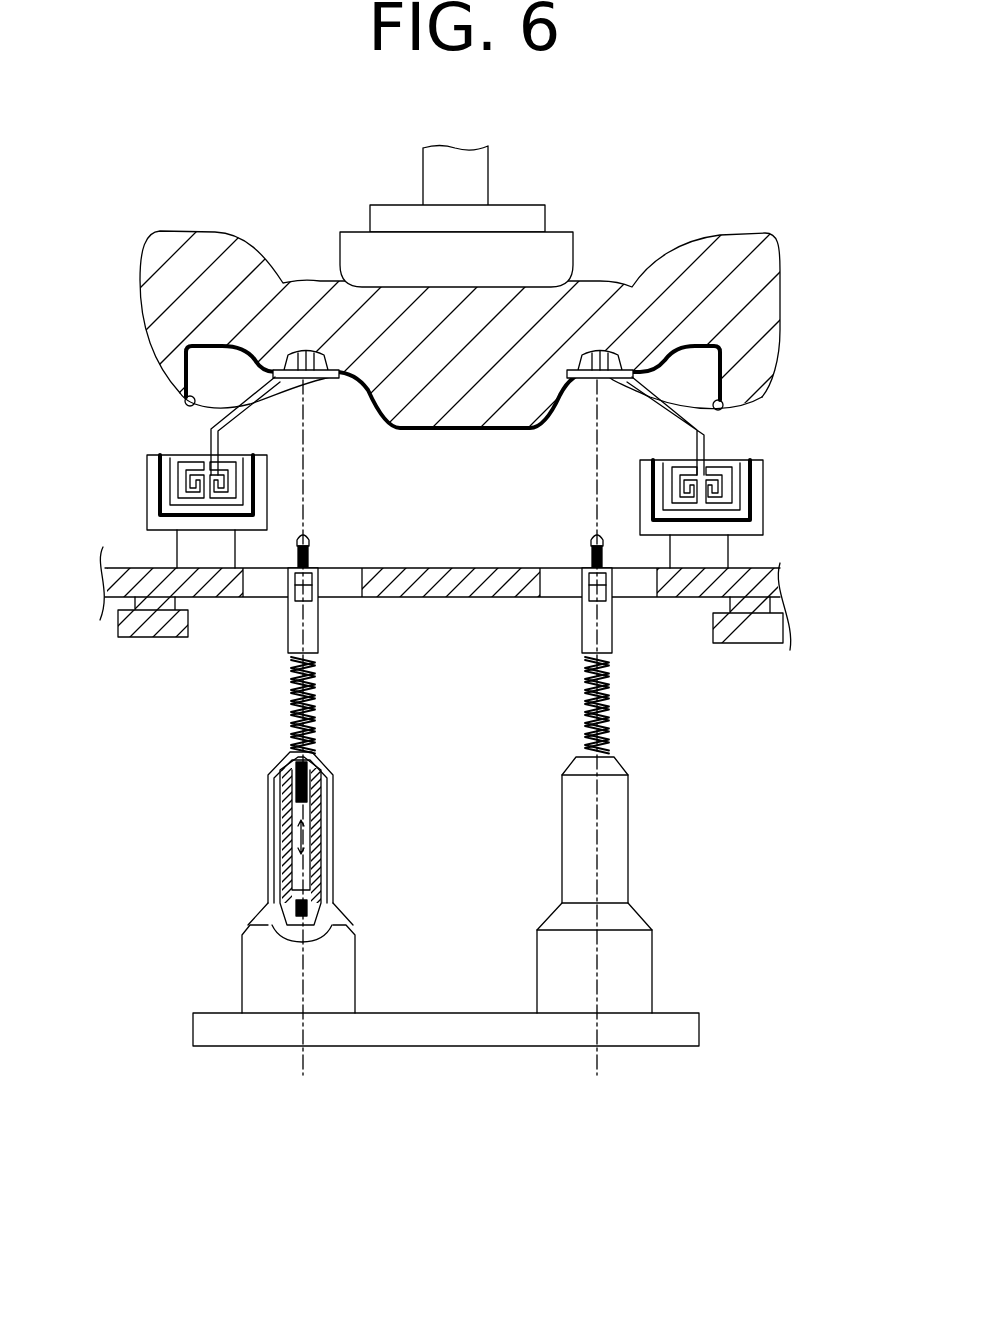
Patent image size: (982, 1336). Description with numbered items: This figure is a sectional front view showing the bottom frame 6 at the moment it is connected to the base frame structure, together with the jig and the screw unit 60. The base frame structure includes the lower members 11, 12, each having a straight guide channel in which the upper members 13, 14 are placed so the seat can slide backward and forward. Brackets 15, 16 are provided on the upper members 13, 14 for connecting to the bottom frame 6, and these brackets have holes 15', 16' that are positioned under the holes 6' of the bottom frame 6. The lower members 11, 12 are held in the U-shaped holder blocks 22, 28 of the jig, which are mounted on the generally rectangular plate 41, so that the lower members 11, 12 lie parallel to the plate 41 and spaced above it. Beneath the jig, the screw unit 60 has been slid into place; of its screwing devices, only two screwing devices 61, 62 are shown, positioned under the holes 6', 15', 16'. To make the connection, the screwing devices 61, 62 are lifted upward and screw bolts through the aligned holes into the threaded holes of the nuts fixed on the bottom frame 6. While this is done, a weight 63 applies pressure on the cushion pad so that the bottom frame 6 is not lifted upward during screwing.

The bottom frame 6 is at (453, 422).
The holes of the bottom frame 6' is at (488, 304).
The weight 63 is at (527, 265).
The hole of bracket 16' is at (130, 369).
The hole of bracket 15' is at (787, 371).
The bracket 16 is at (172, 426).
The bracket 15 is at (743, 423).
The upper member 14 is at (200, 441).
The upper member 13 is at (708, 443).
The lower member 12 is at (165, 493).
The lower member 11 is at (742, 457).
The holder block 28 is at (150, 518).
The holder block 22 is at (762, 511).
The plate 41 is at (753, 587).
The screwing device 62 is at (255, 947).
The screwing device 61 is at (633, 960).
The screw unit 60 is at (411, 1077).